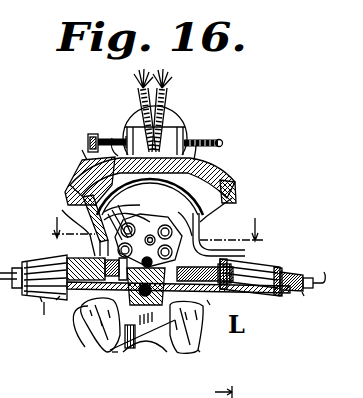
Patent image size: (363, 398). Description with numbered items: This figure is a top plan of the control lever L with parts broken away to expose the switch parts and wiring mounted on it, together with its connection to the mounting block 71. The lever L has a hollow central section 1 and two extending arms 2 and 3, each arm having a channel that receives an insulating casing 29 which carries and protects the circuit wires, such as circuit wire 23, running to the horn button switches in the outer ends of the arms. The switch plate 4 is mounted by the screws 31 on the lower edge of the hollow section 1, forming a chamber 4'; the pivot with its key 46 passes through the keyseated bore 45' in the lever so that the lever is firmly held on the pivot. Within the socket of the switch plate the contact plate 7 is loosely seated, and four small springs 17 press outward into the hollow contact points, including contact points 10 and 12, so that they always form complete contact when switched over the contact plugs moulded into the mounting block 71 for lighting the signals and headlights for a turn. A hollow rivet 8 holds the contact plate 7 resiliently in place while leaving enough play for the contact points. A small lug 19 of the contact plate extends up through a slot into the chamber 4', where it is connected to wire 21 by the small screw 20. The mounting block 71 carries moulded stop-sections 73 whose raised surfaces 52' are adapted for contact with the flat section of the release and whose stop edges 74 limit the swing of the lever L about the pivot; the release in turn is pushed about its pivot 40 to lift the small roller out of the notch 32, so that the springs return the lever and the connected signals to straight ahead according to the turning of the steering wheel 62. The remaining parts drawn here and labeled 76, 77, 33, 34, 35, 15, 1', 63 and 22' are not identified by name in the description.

The conductor wire 76 is at (135, 97).
The conductor wire 77 is at (172, 95).
The dome housing 33 is at (177, 137).
The clamp bolt 34 is at (122, 139).
The clamp 35 is at (112, 138).
The pivot 40 is at (219, 140).
The notch 32 is at (197, 139).
The wire 21 is at (152, 186).
The hollow contact point 12 is at (145, 207).
The insulator 15 is at (168, 215).
The screws 31 is at (83, 168).
The frame extension 1' is at (58, 147).
The hollow central section 1 is at (59, 215).
The switch plate 4 is at (81, 225).
The small springs 17 is at (158, 246).
The contact plate 7 is at (225, 234).
The chamber 4' is at (242, 190).
The hollow rivet 8 is at (207, 216).
The small lug 19 is at (148, 255).
The hollow contact point 10 is at (178, 286).
The steering wheel 62 is at (33, 308).
The keyseated bore 45' is at (97, 292).
The arm 3 is at (40, 297).
The mounting block 71 is at (44, 315).
The stop edges 74 is at (56, 300).
The rod 63 is at (11, 384).
The arm 2 is at (260, 296).
The insulating casings 29 is at (290, 275).
The circuit wire 23 is at (317, 273).
The rod 22' is at (300, 321).
The key 46 is at (142, 325).
The stop-sections 73 is at (210, 368).
The raised surfaces 52' is at (134, 362).
The small screw 20 is at (236, 389).